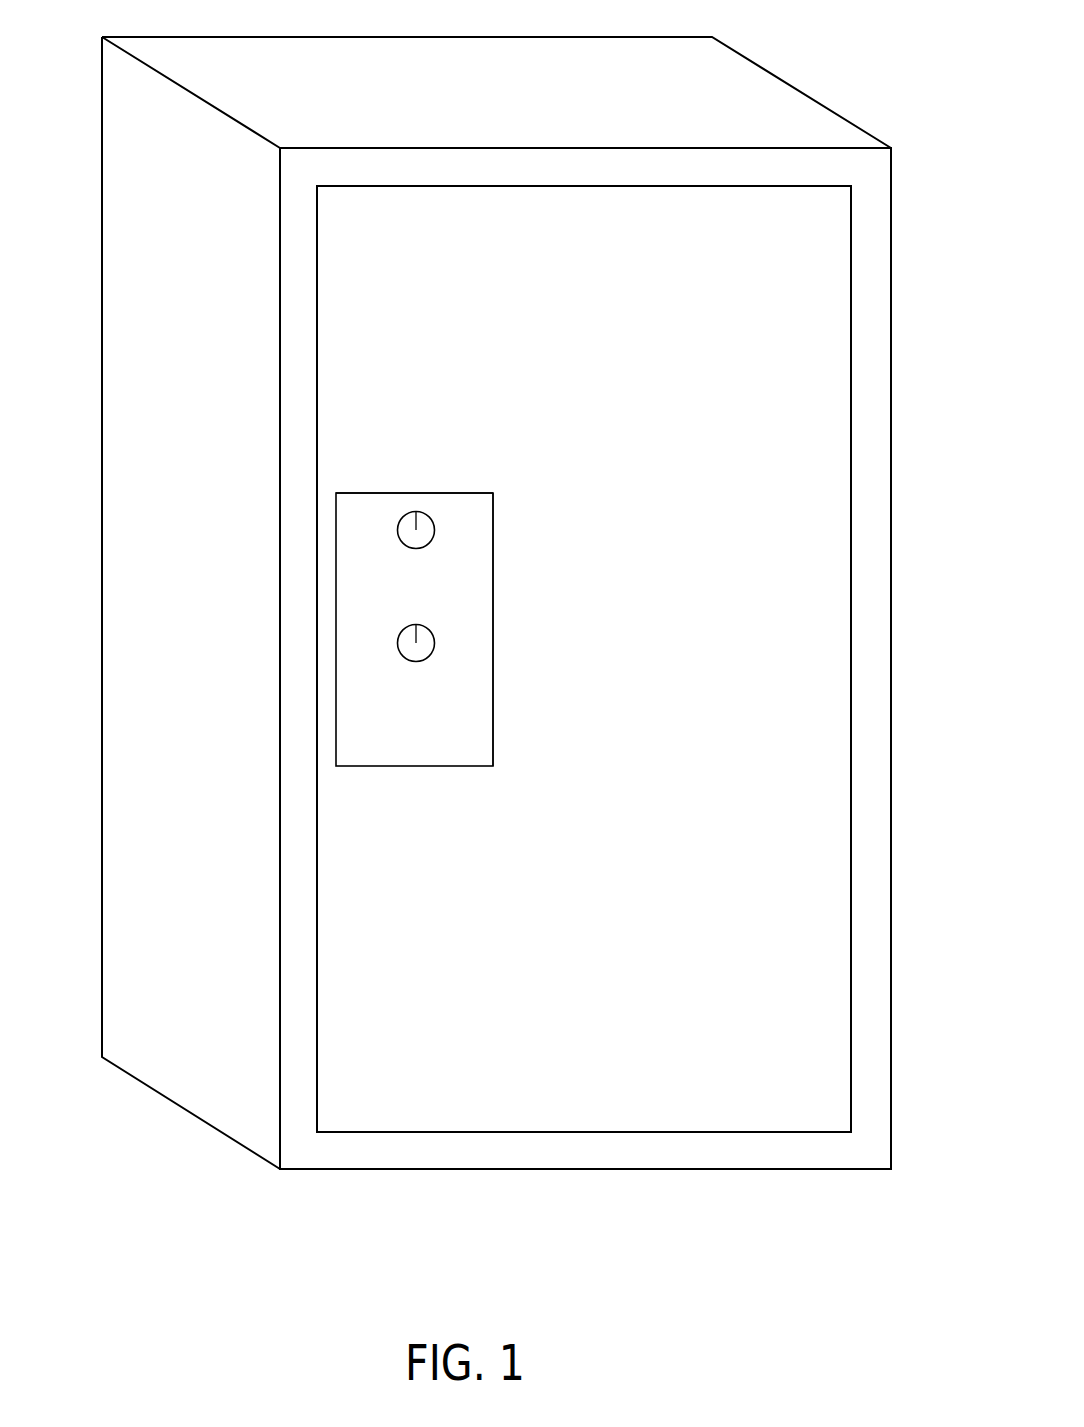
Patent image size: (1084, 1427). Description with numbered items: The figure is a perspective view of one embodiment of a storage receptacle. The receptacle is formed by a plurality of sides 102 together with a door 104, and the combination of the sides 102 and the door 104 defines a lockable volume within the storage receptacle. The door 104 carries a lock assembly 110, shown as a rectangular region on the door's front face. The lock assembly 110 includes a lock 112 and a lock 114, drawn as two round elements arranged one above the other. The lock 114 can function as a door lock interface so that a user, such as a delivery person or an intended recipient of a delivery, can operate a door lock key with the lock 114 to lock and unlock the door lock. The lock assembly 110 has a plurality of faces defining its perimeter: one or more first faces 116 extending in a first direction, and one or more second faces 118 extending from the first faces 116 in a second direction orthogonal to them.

The sides 102 is at (135, 43).
The door 104 is at (800, 340).
The lock assembly 110 is at (482, 498).
The lock 112 is at (408, 528).
The lock 114 is at (408, 641).
The first faces 116 is at (494, 635).
The second faces 118 is at (383, 492).